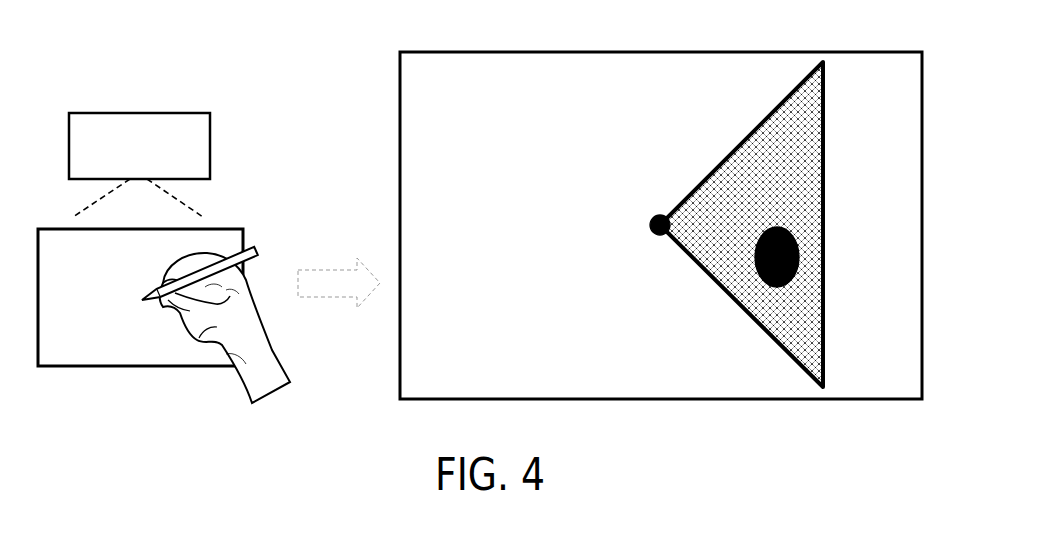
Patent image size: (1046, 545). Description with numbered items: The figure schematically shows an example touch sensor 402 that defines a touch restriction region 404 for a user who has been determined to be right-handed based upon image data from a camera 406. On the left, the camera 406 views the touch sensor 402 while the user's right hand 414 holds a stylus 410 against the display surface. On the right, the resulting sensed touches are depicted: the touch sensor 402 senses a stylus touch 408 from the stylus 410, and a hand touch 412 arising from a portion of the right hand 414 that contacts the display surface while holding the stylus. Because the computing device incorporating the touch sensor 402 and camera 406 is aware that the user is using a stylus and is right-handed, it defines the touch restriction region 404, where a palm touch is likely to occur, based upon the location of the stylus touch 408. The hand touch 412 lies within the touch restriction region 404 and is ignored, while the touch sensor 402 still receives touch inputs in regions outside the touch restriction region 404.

The touch sensor 402 is at (73, 366).
The touch restriction region 404 is at (825, 216).
The camera 406 is at (156, 171).
The stylus touch 408 is at (652, 225).
The stylus 410 is at (252, 247).
The hand touch 412 is at (765, 272).
The right hand 414 is at (263, 302).